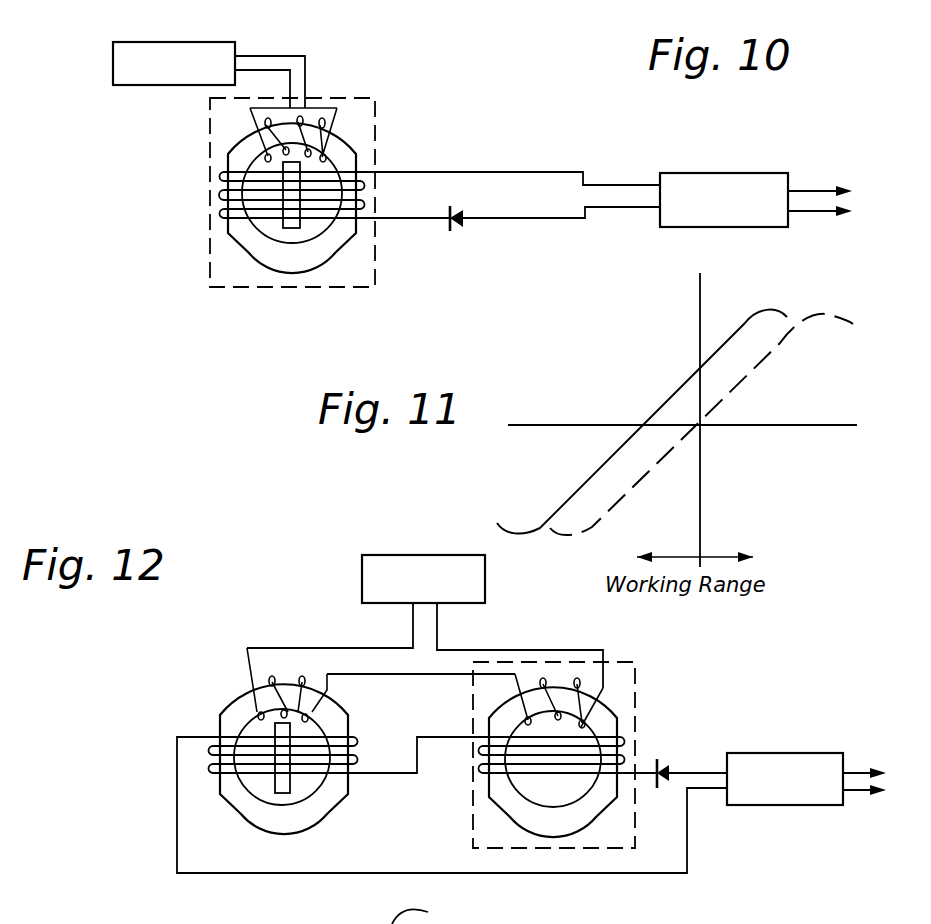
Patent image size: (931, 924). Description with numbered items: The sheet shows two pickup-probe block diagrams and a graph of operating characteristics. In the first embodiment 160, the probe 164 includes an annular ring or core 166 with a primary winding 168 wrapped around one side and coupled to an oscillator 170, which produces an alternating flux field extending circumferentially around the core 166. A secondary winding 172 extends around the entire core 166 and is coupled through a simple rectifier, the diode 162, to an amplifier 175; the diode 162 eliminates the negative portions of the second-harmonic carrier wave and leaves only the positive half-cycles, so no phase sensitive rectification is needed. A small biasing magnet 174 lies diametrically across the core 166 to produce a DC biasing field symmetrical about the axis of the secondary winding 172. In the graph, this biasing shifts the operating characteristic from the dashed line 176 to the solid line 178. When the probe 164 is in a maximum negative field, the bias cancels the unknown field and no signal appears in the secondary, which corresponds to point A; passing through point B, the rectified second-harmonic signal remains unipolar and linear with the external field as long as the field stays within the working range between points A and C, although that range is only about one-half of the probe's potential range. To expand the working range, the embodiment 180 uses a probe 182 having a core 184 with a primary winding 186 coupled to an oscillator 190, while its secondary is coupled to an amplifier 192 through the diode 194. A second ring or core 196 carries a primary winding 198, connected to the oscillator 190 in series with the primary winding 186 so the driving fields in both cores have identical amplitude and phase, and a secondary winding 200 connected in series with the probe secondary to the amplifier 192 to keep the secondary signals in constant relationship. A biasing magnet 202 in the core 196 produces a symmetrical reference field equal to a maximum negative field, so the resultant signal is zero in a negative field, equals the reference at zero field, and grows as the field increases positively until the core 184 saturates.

In FIG. 10, the embodiment 160 is at (450, 91).
In FIG. 10, the diode 162 is at (460, 228).
In FIG. 10, the probe 164 is at (200, 246).
In FIG. 10, the core 166 is at (277, 257).
In FIG. 10, the primary winding 168 is at (258, 144).
In FIG. 10, the oscillator 170 is at (217, 42).
In FIG. 10, the secondary winding 172 is at (223, 193).
In FIG. 10, the biasing magnet 174 is at (300, 228).
In FIG. 10, the amplifier 175 is at (735, 173).
In FIG. 11, the dashed line 176 is at (773, 350).
In FIG. 11, the solid line 178 is at (568, 499).
In FIG. 11, the point A is at (643, 425).
In FIG. 11, the point B is at (700, 368).
In FIG. 11, the point C is at (750, 317).
In FIG. 12, the embodiment 180 is at (725, 680).
In FIG. 12, the probe 182 is at (652, 675).
In FIG. 12, the core 184 is at (603, 717).
In FIG. 12, the primary winding 186 is at (515, 687).
In FIG. 12, the oscillator 190 is at (362, 575).
In FIG. 12, the amplifier 192 is at (817, 753).
In FIG. 12, the diode 194 is at (658, 758).
In FIG. 12, the core 196 is at (285, 817).
In FIG. 12, the primary winding 198 is at (270, 683).
In FIG. 12, the secondary winding 200 is at (213, 748).
In FIG. 12, the biasing magnet 202 is at (275, 778).